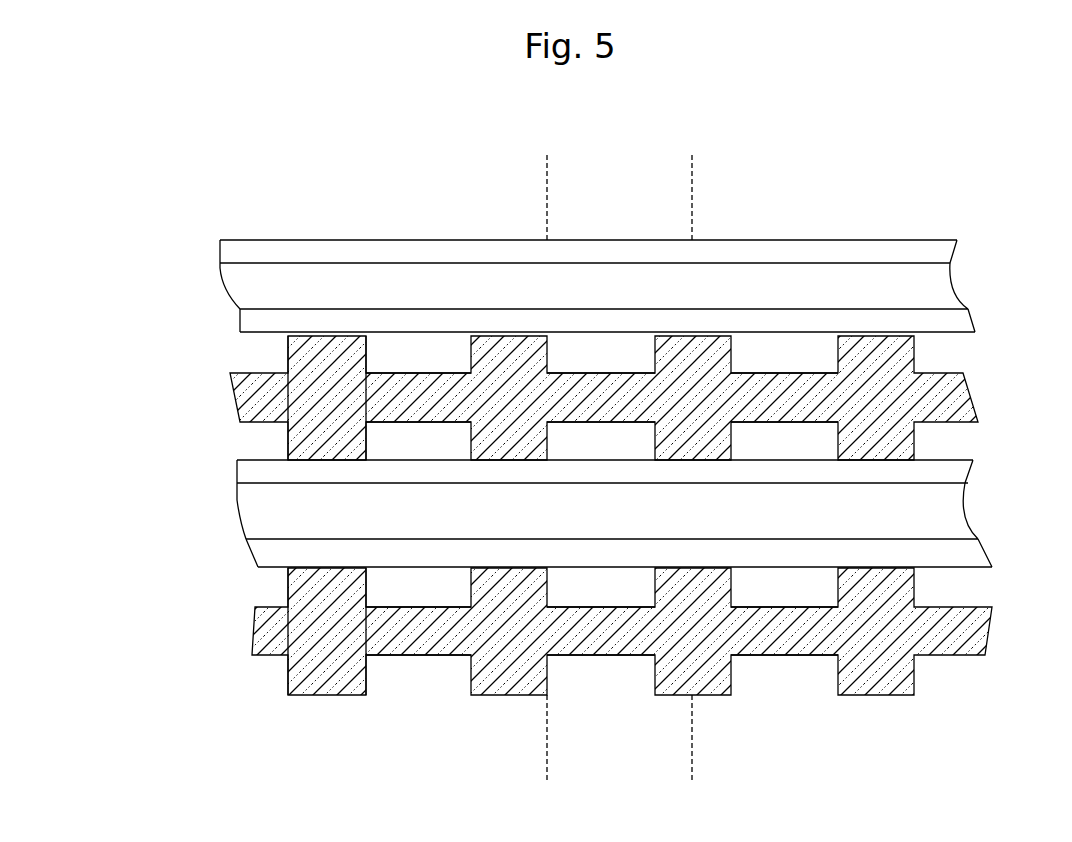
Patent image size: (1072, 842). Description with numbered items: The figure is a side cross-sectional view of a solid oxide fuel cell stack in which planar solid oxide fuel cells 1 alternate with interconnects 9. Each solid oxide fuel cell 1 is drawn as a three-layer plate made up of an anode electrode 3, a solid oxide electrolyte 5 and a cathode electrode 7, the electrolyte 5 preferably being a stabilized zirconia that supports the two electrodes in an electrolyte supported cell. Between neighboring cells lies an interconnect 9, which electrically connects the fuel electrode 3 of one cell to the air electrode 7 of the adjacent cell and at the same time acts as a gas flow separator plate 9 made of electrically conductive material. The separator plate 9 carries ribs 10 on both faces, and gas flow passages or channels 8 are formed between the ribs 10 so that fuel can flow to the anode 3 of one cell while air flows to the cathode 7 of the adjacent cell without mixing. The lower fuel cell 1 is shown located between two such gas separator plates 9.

The solid oxide fuel cell 1 is at (605, 398).
The anode electrode 3 is at (222, 252).
The solid oxide electrolyte 5 is at (222, 290).
The cathode electrode 7 is at (240, 325).
The gas flow channels 8 is at (793, 688).
The interconnect / gas flow separator plate 9 is at (599, 515).
The ribs 10 is at (288, 357).